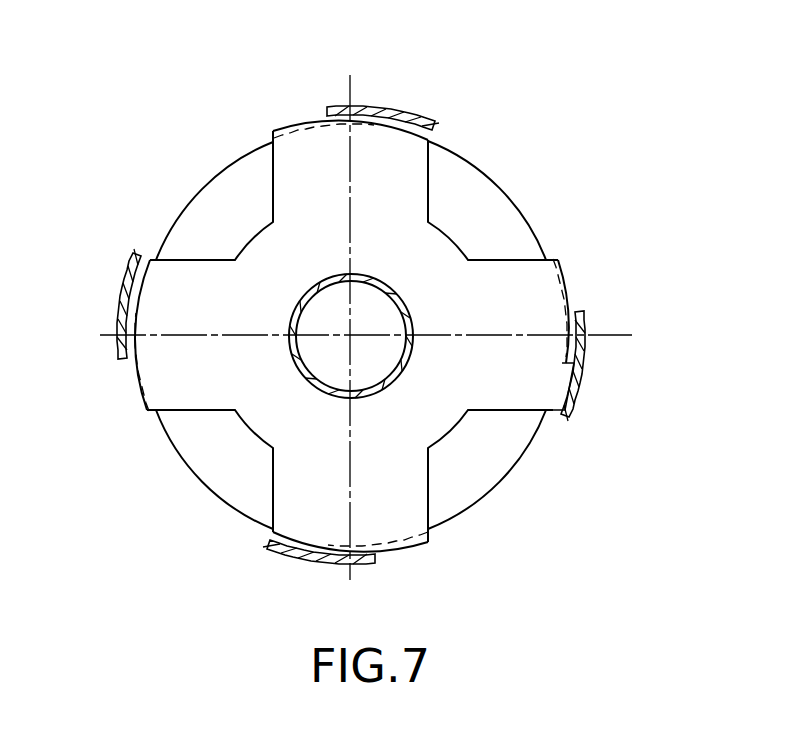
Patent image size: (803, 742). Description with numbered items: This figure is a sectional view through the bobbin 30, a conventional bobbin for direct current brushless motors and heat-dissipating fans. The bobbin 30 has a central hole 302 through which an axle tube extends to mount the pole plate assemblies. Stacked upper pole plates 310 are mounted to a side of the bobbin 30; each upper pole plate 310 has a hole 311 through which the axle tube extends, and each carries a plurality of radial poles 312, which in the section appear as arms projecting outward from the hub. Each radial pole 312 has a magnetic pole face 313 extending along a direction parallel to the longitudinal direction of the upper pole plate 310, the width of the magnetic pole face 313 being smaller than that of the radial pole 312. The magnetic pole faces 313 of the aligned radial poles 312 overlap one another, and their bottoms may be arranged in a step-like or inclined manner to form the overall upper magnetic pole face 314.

The bobbin 30 is at (497, 210).
The central hole 302 is at (303, 302).
The hole 311 is at (351, 336).
The upper pole plate 310 is at (443, 420).
The radial pole 312 is at (553, 388).
The magnetic pole face 313 is at (567, 273).
The overall upper magnetic pole face 314 is at (381, 92).